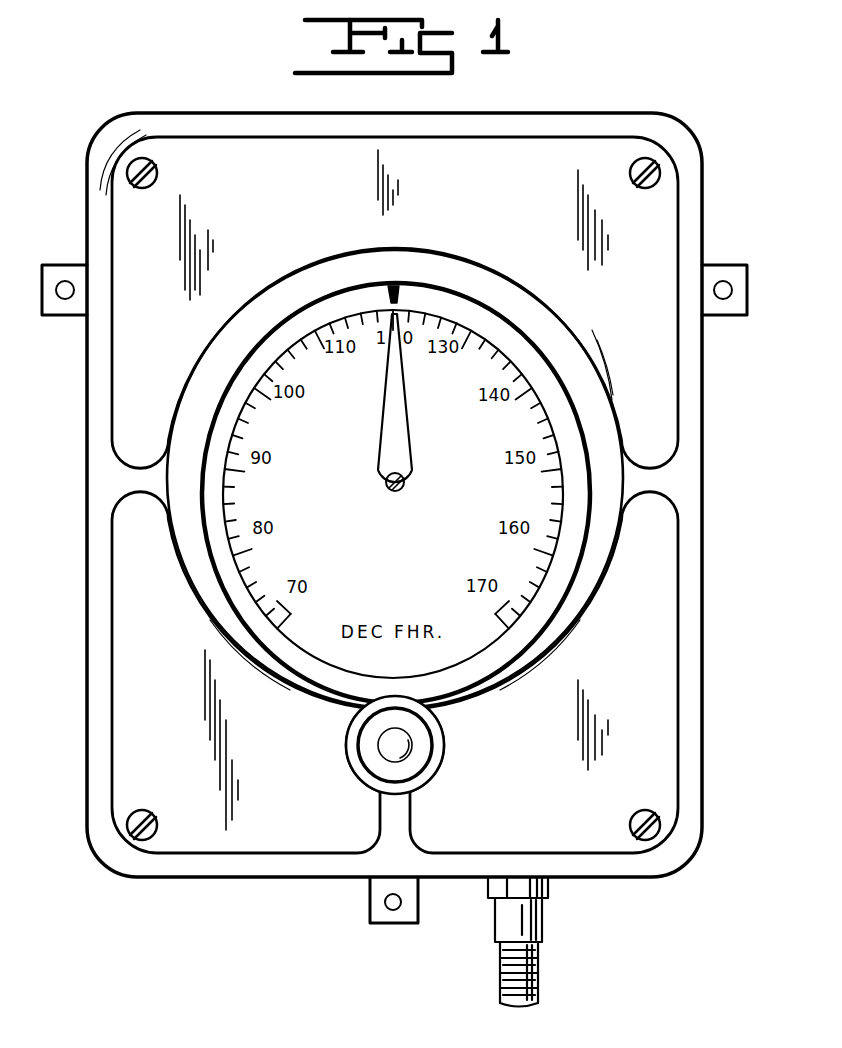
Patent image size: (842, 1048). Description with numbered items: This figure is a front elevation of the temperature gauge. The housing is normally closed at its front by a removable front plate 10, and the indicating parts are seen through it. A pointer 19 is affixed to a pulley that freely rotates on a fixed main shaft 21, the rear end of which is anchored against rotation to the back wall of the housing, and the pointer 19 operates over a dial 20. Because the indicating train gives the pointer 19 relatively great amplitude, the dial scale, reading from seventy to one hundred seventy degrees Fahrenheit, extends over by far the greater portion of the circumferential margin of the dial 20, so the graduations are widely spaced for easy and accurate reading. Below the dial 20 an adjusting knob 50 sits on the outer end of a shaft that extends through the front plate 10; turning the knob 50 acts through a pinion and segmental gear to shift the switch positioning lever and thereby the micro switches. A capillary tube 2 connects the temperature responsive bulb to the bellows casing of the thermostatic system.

The front plate 10 is at (700, 598).
The dial 20 is at (510, 350).
The pointer 19 is at (402, 430).
The main shaft 21 is at (392, 493).
The adjusting knob 50 is at (436, 773).
The capillary tube 2 is at (540, 976).